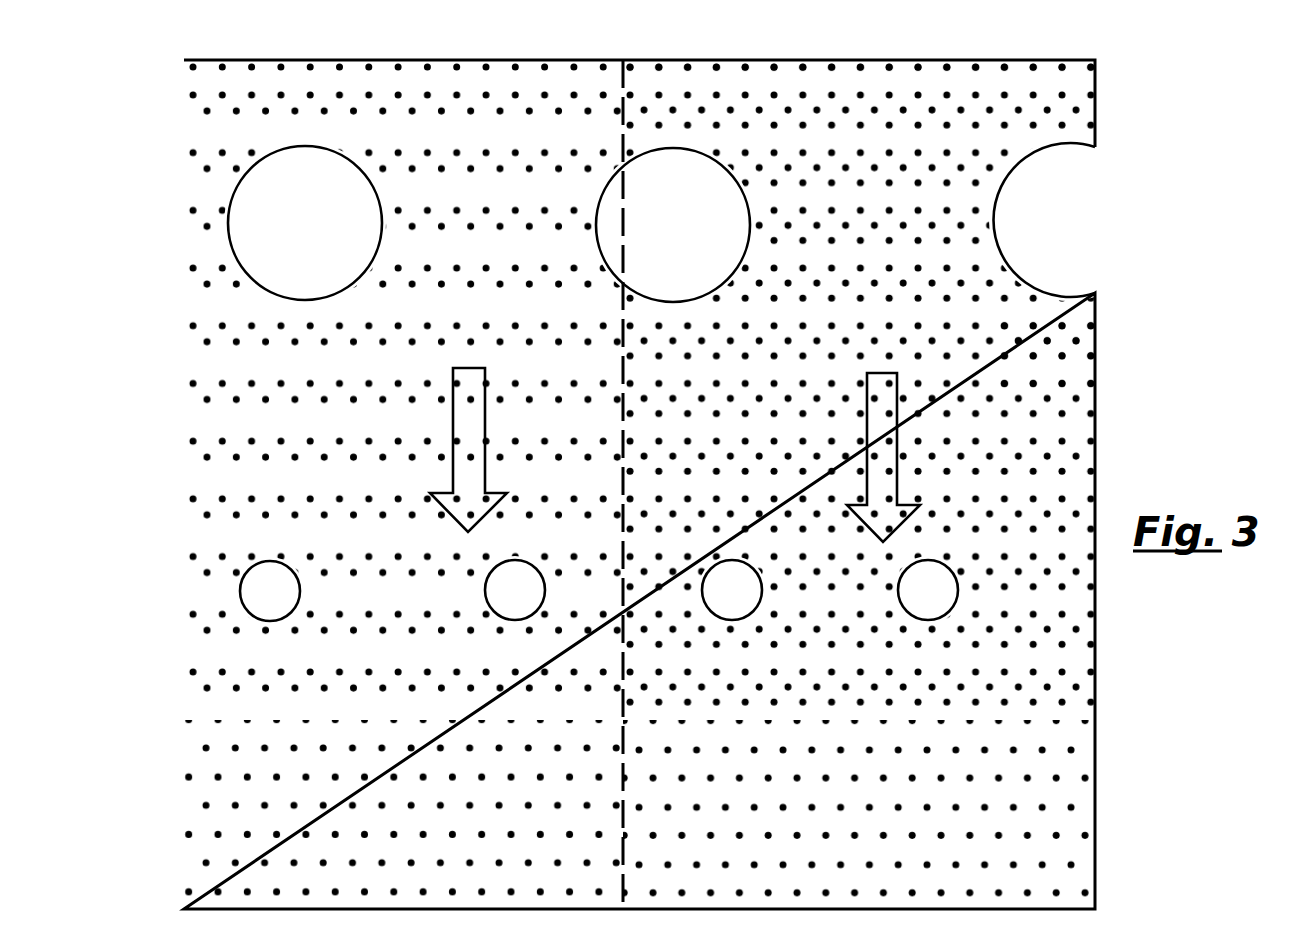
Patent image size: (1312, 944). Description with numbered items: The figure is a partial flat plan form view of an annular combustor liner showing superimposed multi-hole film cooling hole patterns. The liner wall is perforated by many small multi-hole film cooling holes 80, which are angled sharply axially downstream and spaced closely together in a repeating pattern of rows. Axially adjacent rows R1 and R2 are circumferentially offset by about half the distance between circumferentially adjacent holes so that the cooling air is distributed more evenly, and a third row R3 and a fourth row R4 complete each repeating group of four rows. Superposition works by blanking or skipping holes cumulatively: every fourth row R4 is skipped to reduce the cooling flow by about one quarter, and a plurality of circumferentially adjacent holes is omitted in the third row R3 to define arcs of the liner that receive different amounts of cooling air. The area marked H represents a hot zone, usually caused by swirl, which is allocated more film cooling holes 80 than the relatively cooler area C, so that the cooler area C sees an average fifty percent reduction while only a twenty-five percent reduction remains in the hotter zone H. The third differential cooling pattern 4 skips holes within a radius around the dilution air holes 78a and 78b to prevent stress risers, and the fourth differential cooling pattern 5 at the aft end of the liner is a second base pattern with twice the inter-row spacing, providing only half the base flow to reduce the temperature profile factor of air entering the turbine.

The third differential cooling pattern 4 is at (217, 202).
The multi-hole film cooling holes 80 is at (205, 283).
The dilution air hole 78a is at (270, 296).
The dilution air hole 78b is at (237, 591).
The fourth differential cooling pattern 5 is at (1063, 770).
The cooler area C is at (473, 424).
The hot zone H is at (885, 430).
The first row R1 is at (1085, 323).
The second row R2 is at (1078, 343).
The third row R3 is at (1085, 357).
The fourth row R4 is at (1082, 370).